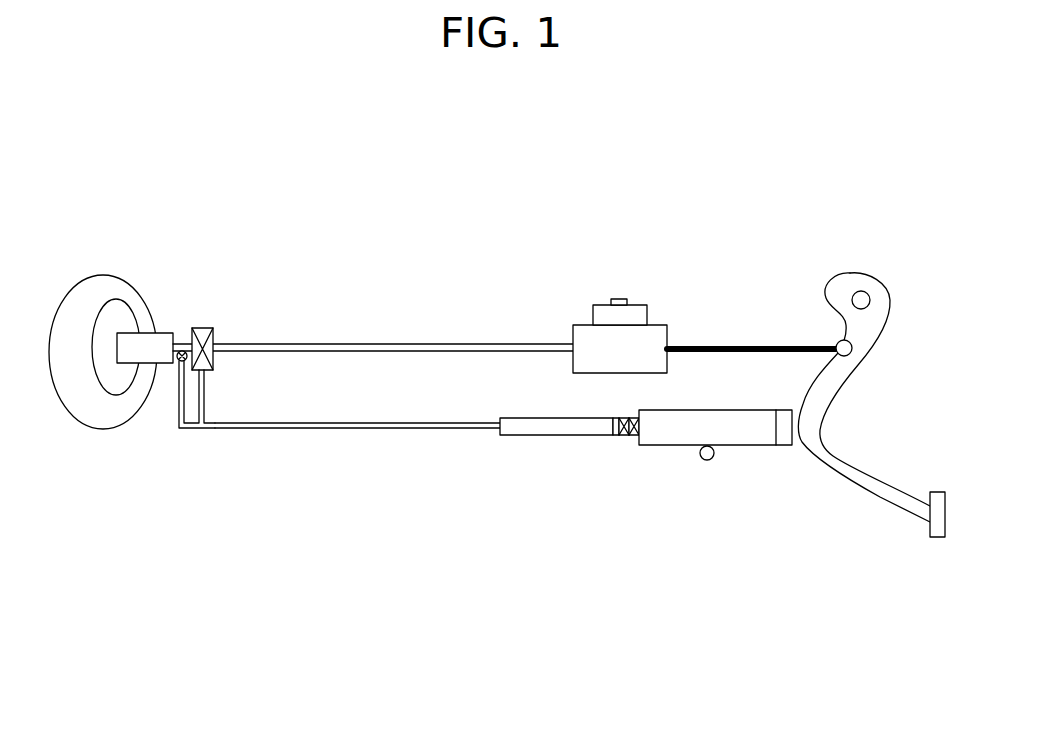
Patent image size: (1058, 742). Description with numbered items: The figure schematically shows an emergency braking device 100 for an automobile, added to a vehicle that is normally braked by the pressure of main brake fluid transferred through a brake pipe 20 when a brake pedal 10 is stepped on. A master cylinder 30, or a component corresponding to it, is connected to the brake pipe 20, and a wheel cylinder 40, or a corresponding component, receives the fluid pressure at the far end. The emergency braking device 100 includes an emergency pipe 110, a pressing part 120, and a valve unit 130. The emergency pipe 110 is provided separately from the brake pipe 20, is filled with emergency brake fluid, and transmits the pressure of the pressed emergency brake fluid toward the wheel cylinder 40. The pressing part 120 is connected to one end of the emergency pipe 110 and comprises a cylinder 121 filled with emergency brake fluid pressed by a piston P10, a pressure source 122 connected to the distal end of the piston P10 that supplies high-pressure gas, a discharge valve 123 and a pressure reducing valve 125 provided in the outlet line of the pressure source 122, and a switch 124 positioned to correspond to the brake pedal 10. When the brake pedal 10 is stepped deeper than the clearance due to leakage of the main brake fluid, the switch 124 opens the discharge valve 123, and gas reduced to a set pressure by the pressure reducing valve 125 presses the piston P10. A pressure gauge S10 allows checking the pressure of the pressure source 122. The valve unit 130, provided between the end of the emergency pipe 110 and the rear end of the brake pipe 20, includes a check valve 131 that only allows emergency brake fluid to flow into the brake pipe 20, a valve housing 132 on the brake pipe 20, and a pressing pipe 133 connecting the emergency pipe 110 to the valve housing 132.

The emergency braking device 100 is at (510, 187).
The brake pedal 10 is at (942, 523).
The brake pipe 20 is at (401, 343).
The master cylinder 30 is at (635, 317).
The wheel cylinder 40 is at (128, 352).
The emergency pipe 110 is at (360, 429).
The pressing part 120 is at (520, 440).
The cylinder 121 is at (561, 436).
The pressure source 122 is at (752, 428).
The discharge valve 123 is at (632, 436).
The switch 124 is at (787, 432).
The pressure reducing valve 125 is at (623, 436).
The valve unit 130 is at (198, 326).
The check valve 131 is at (177, 361).
The valve housing 132 is at (211, 327).
The pressing pipe 133 is at (204, 398).
The piston P10 is at (615, 436).
The pressure gauge S10 is at (705, 460).